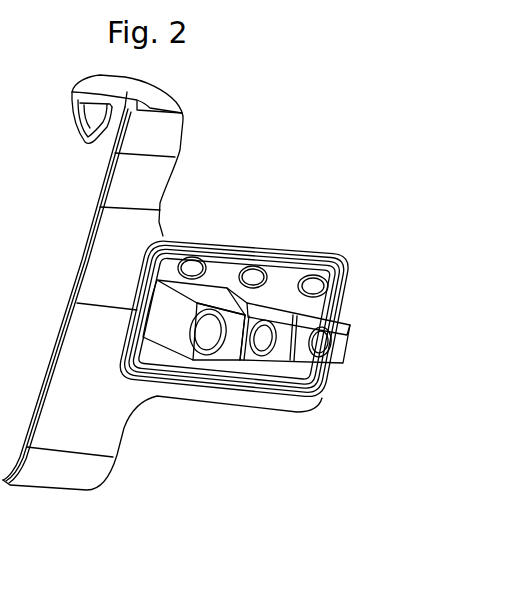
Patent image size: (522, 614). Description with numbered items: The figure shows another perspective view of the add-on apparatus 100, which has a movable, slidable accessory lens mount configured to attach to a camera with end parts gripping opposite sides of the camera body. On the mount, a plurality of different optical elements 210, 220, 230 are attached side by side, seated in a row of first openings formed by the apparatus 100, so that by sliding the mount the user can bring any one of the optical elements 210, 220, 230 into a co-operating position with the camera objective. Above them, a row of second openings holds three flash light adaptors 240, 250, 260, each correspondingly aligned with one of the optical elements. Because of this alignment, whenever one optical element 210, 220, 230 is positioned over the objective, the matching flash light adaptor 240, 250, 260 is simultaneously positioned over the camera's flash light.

The apparatus 100 is at (261, 122).
The optical element 210 is at (202, 356).
The optical element 220 is at (264, 358).
The optical element 230 is at (318, 359).
The flash light adaptor 240 is at (195, 258).
The flash light adaptor 250 is at (256, 266).
The flash light adaptor 260 is at (315, 276).